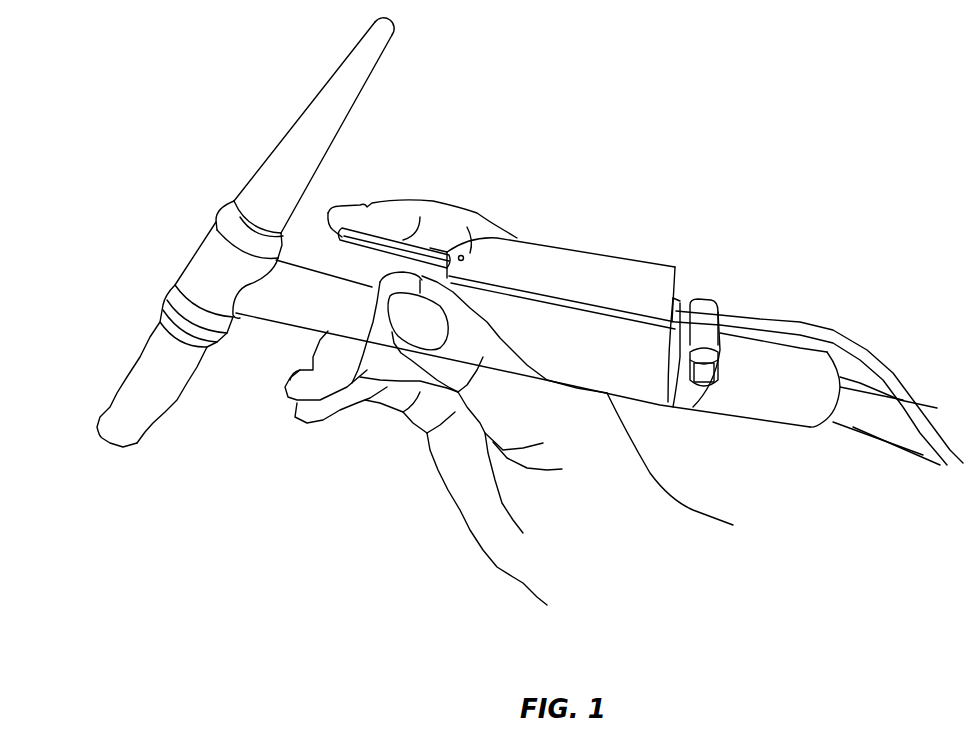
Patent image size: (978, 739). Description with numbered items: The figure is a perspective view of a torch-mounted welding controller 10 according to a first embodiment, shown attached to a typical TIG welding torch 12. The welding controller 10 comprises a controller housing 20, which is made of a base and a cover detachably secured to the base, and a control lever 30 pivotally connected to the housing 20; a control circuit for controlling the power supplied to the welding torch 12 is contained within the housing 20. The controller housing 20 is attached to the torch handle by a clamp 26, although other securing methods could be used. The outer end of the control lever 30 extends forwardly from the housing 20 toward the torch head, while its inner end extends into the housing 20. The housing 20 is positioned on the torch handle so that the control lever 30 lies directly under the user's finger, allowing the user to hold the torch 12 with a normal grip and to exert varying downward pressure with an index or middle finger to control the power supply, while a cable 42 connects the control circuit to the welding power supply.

The welding controller 10 is at (683, 125).
The TIG welding torch 12 is at (195, 192).
The controller housing 20 is at (598, 245).
The clamp 26 is at (675, 412).
The control lever 30 is at (378, 228).
The cable 42 is at (787, 320).